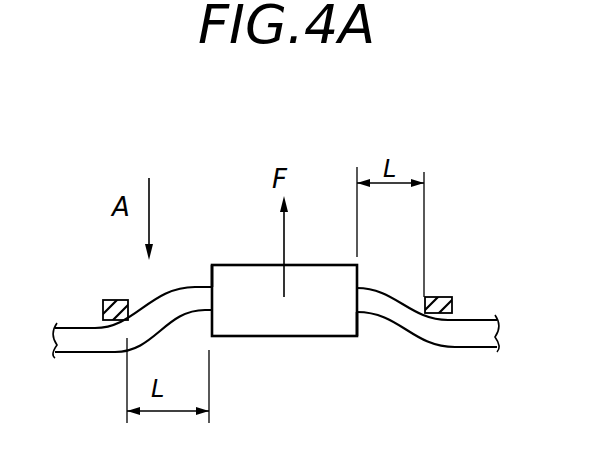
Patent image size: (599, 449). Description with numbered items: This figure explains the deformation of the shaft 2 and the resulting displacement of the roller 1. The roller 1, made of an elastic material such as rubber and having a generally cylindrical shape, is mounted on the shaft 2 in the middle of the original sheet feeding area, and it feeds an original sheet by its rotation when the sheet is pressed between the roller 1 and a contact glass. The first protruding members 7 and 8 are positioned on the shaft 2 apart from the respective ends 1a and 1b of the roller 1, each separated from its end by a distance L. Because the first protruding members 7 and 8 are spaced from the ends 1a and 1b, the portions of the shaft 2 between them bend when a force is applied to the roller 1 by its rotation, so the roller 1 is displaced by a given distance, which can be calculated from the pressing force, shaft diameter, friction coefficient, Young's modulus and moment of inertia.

The roller 1 is at (298, 320).
The end of the roller 1a is at (358, 328).
The end of the roller 1b is at (212, 270).
The shaft 2 is at (103, 346).
The first protruding member 7 is at (442, 296).
The first protruding member 8 is at (113, 300).